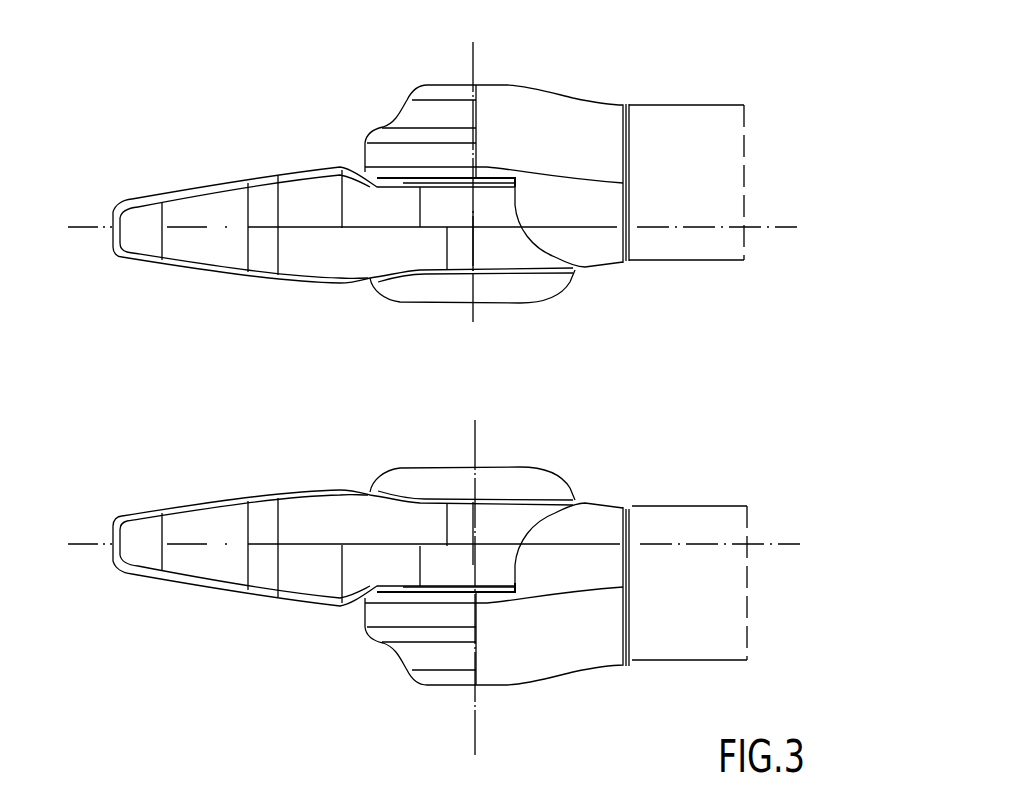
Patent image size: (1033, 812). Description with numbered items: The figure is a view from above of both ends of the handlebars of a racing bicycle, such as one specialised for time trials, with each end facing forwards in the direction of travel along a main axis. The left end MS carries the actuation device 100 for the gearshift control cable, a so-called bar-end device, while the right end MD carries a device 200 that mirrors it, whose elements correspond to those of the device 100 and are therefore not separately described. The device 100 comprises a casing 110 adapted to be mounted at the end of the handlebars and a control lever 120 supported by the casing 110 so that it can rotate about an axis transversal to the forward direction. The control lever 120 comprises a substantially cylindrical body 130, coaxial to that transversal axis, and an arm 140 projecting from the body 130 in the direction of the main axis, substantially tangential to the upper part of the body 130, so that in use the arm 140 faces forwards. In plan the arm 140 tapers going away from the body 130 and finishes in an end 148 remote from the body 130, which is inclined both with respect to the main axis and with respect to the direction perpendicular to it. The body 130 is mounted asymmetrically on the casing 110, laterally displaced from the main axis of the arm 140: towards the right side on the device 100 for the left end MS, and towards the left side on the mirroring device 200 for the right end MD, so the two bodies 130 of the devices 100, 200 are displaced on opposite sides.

The actuation device 100 is at (439, 575).
The casing 110 is at (592, 527).
The control lever 120 is at (186, 597).
The body 130 is at (500, 487).
The arm 140 is at (222, 498).
The end 148 is at (112, 553).
The device 200 is at (443, 161).
The right end MD is at (683, 140).
The left end MS is at (687, 527).